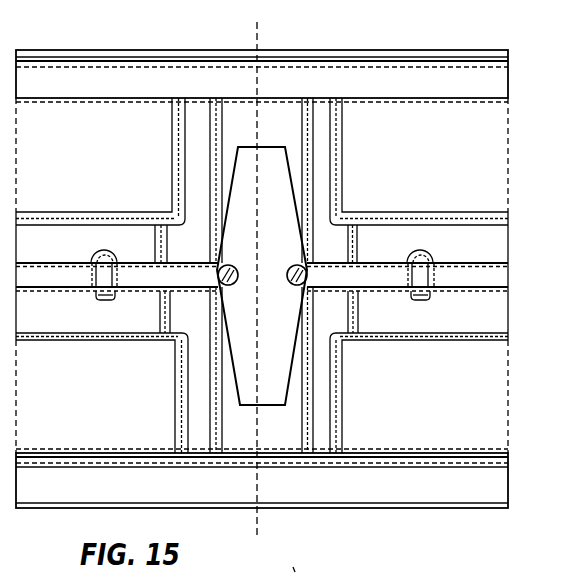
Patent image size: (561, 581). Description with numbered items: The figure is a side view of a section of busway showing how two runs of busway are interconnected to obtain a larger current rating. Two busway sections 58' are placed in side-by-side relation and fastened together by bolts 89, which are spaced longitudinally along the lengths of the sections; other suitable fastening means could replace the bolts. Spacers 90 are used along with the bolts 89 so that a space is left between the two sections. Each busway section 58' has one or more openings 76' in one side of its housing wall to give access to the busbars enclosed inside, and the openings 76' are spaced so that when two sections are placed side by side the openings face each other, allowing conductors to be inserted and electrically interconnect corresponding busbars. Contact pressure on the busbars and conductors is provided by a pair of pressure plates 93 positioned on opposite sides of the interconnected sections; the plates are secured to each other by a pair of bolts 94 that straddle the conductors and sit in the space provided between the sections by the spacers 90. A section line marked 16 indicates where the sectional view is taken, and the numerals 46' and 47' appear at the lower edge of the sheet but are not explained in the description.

The section line 16- 16 is at (233, 23).
The busway section 58' is at (262, 277).
The pressure plate 93 is at (259, 149).
The bolt 94 is at (289, 282).
The opening 76' is at (262, 277).
The bolt 89 is at (113, 257).
The spacer 90 is at (91, 278).
The frame member 46' is at (352, 571).
The frame member 47' is at (416, 571).